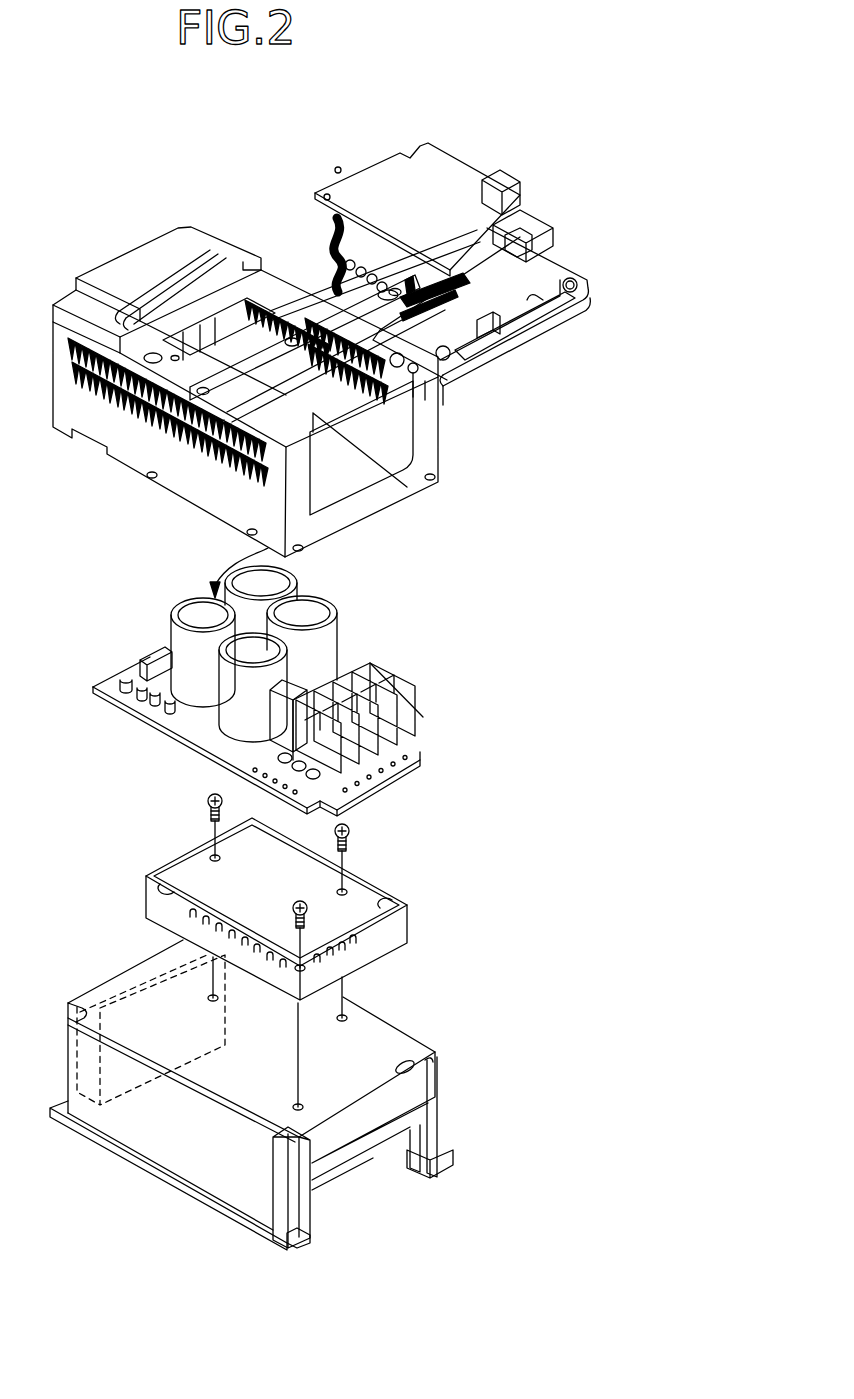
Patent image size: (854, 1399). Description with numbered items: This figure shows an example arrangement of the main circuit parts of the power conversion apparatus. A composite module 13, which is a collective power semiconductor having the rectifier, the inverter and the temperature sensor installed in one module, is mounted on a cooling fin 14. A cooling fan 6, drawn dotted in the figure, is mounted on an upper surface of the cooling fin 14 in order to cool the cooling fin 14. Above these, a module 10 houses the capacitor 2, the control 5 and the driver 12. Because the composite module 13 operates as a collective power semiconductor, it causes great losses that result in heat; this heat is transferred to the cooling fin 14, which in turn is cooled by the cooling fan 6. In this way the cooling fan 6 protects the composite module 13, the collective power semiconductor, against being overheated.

The capacitor 2 is at (337, 634).
The control 5 is at (360, 178).
The cooling fan 6 is at (123, 997).
The module 10 is at (108, 268).
The driver 12 is at (110, 678).
The composite module 13 is at (383, 893).
The cooling fin 14 is at (348, 1128).